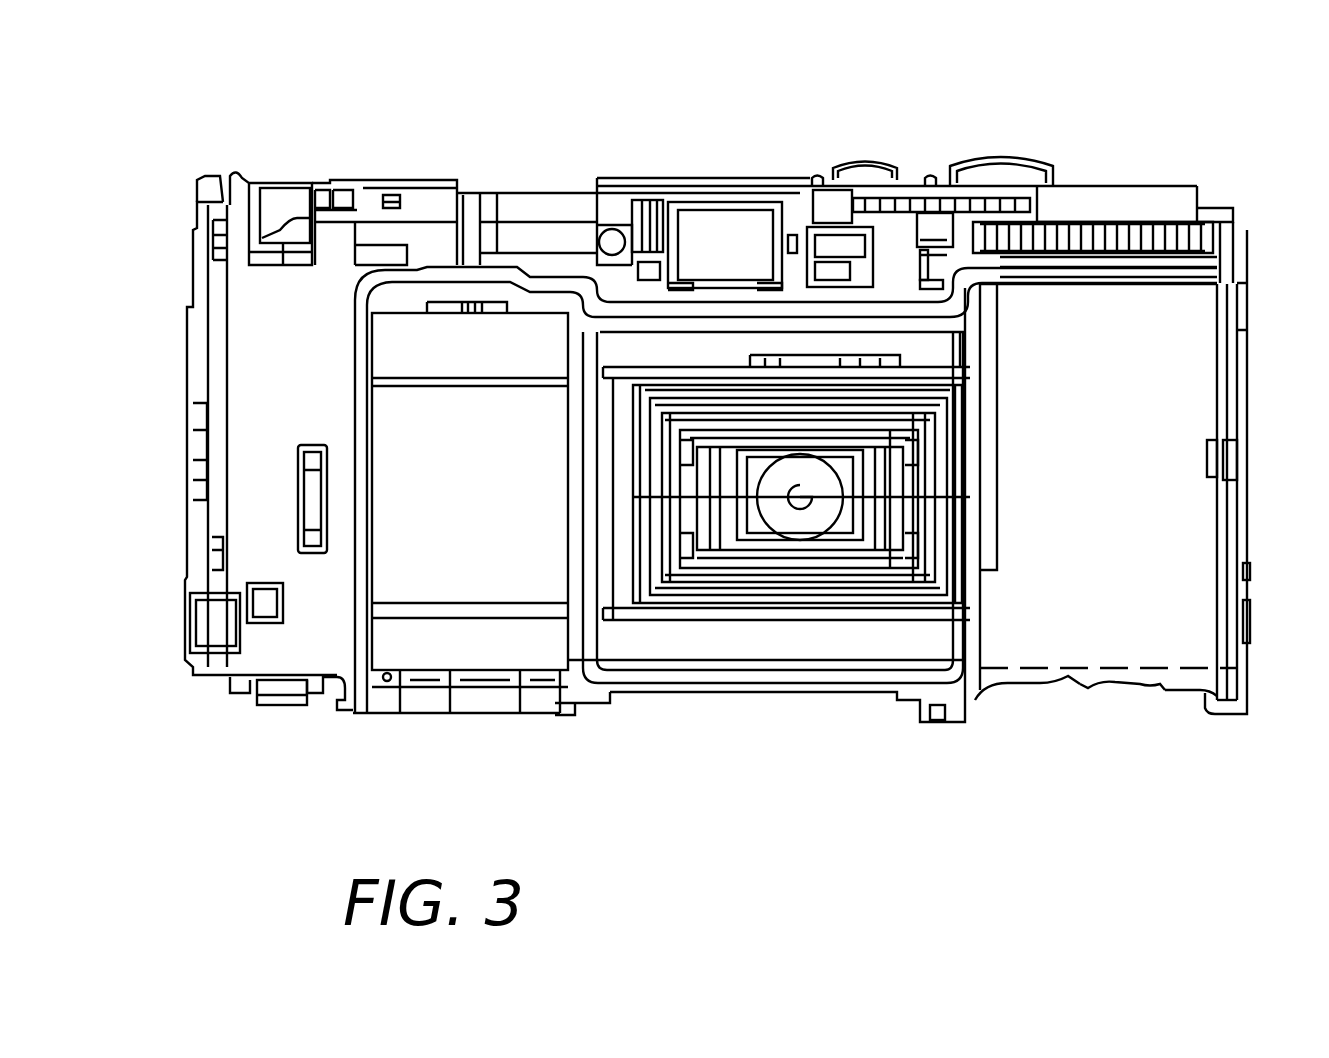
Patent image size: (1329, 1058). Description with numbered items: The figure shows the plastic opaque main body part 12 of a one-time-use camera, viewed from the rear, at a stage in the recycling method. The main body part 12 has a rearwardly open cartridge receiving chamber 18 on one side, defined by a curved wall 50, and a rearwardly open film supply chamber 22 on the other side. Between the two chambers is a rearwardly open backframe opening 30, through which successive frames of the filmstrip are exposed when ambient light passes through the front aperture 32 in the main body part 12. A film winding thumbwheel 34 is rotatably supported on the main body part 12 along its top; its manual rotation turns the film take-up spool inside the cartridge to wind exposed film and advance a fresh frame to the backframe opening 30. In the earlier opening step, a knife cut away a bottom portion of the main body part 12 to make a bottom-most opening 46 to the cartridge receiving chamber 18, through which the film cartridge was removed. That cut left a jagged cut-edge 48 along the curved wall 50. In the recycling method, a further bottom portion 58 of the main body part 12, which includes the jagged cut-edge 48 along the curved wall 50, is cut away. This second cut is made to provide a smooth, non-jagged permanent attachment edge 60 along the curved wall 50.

The main body part 12 is at (318, 137).
The cartridge receiving chamber 18 is at (1197, 545).
The film supply chamber 22 is at (452, 452).
The backframe opening 30 is at (718, 583).
The front aperture 32 is at (813, 503).
The film winding thumbwheel 34 is at (1133, 215).
The bottom-most opening 46 is at (1247, 713).
The jagged cut-edge 48 is at (1047, 683).
The curved wall 50 is at (1110, 452).
The further bottom portion 58 is at (1117, 692).
The permanent attachment edge 60 is at (1155, 663).